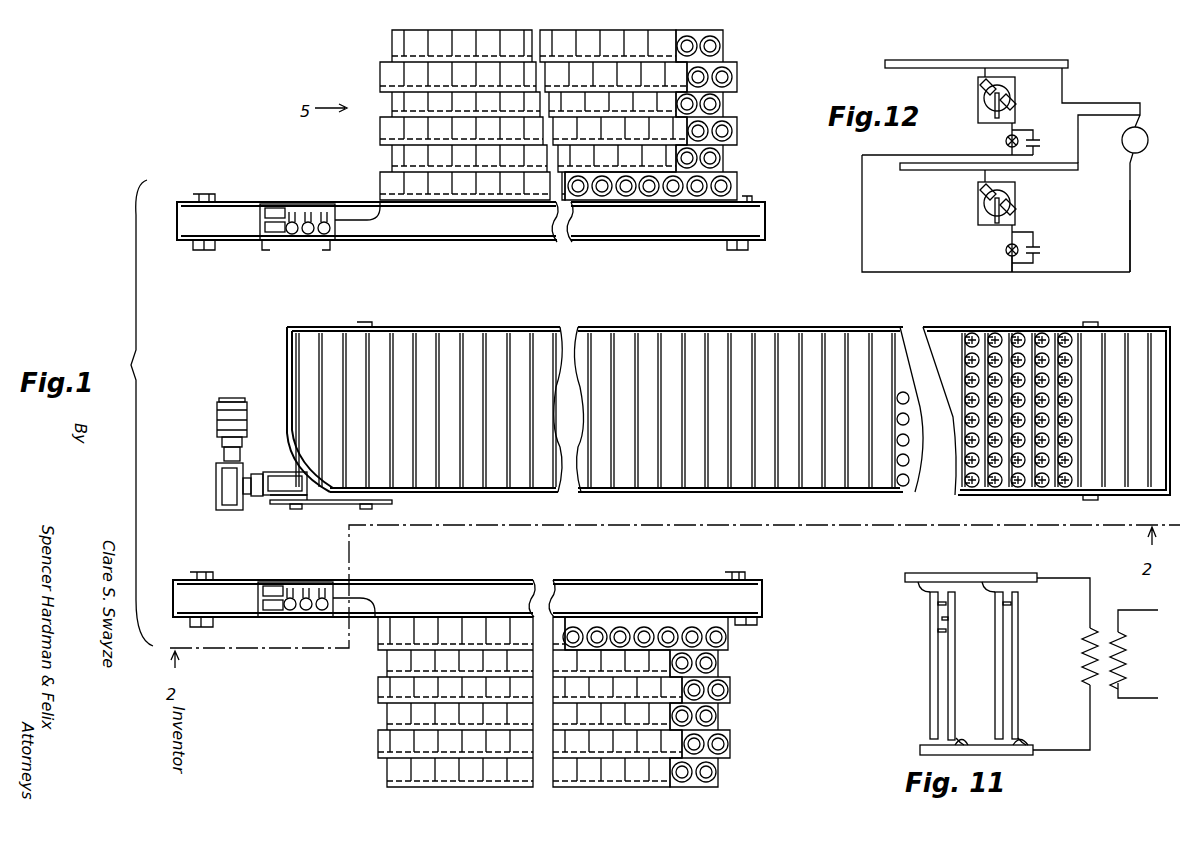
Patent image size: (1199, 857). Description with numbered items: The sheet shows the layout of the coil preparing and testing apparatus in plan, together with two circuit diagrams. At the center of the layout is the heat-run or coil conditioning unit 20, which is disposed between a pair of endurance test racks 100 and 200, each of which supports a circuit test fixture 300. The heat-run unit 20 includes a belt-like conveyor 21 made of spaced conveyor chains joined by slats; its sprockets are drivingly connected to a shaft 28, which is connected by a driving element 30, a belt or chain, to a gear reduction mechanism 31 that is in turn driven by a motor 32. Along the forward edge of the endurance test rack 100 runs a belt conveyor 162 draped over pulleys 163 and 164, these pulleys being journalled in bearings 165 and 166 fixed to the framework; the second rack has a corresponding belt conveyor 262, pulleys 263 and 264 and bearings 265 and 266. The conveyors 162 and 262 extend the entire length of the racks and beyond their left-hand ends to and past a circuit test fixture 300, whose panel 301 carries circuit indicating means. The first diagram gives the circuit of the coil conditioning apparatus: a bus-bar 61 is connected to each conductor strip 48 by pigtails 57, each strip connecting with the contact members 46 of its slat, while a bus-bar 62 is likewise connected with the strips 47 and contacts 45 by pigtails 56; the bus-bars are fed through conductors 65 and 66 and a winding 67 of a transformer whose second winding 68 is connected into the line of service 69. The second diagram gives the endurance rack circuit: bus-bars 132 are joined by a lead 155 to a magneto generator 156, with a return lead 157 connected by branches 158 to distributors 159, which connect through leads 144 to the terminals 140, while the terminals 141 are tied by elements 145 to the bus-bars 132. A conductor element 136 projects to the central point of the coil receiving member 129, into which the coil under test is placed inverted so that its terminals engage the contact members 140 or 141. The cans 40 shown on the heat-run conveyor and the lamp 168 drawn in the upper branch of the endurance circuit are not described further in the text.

In FIG. 1, the heat-run or coil conditioning unit 20 is at (1118, 327).
In FIG. 1, the belt-like conveyor 21 is at (663, 327).
In FIG. 1, the shaft 28 is at (366, 322).
In FIG. 1, the driving element 30 is at (318, 504).
In FIG. 1, the gear reduction mechanism 31 is at (278, 482).
In FIG. 1, the motor 32 is at (240, 413).
In FIG. 1, the cans 40 is at (1065, 329).
In FIG. 11, the contact members 45 is at (930, 626).
In FIG. 11, the contact members 46 is at (956, 611).
In FIG. 11, the conductor strips 47 is at (930, 682).
In FIG. 11, the conductor strips 48 is at (956, 707).
In FIG. 11, the pigtails 56 is at (930, 601).
In FIG. 11, the pigtails 57 is at (961, 742).
In FIG. 11, the bus-bar 61 is at (921, 747).
In FIG. 11, the bus-bar 62 is at (908, 584).
In FIG. 11, the conductor 65 is at (1075, 751).
In FIG. 11, the conductor 66 is at (1090, 578).
In FIG. 11, the winding of a transformer 67 is at (1085, 668).
In FIG. 11, the second winding 68 is at (1125, 666).
In FIG. 11, the line of service 69 is at (1155, 607).
In FIG. 1, the endurance test rack 100 is at (725, 118).
In FIG. 1, the coil receiving member 129 is at (725, 62).
In FIG. 12, the coil receiving member 129 is at (978, 112).
In FIG. 12, the bus-bars 132 is at (929, 54).
In FIG. 12, the conductor element 136 is at (999, 93).
In FIG. 12, the contact members 140 is at (1013, 104).
In FIG. 12, the contact members 141 is at (990, 206).
In FIG. 12, the leads 144 is at (1016, 233).
In FIG. 12, the elements 145 is at (980, 84).
In FIG. 12, the lead 155 is at (1104, 103).
In FIG. 12, the magneto generator 156 is at (1128, 152).
In FIG. 12, the return lead 157 is at (1130, 223).
In FIG. 12, the branches 158 is at (1012, 271).
In FIG. 12, the distributors 159 is at (1006, 250).
In FIG. 1, the belt conveyor 162 is at (683, 232).
In FIG. 1, the pulley 163 is at (765, 222).
In FIG. 1, the pulley 164 is at (177, 212).
In FIG. 1, the bearing 165 is at (748, 197).
In FIG. 1, the bearing 166 is at (205, 194).
In FIG. 12, the lamp 168 is at (1006, 142).
In FIG. 1, the endurance test rack 200 is at (729, 664).
In FIG. 1, the belt conveyor 262 is at (638, 586).
In FIG. 1, the pulley 263 is at (765, 600).
In FIG. 1, the pulley 264 is at (173, 596).
In FIG. 1, the bearing 265 is at (748, 576).
In FIG. 1, the bearing 266 is at (200, 574).
In FIG. 1, the circuit test fixture 300 is at (298, 212).
In FIG. 1, the panel 301 is at (308, 246).